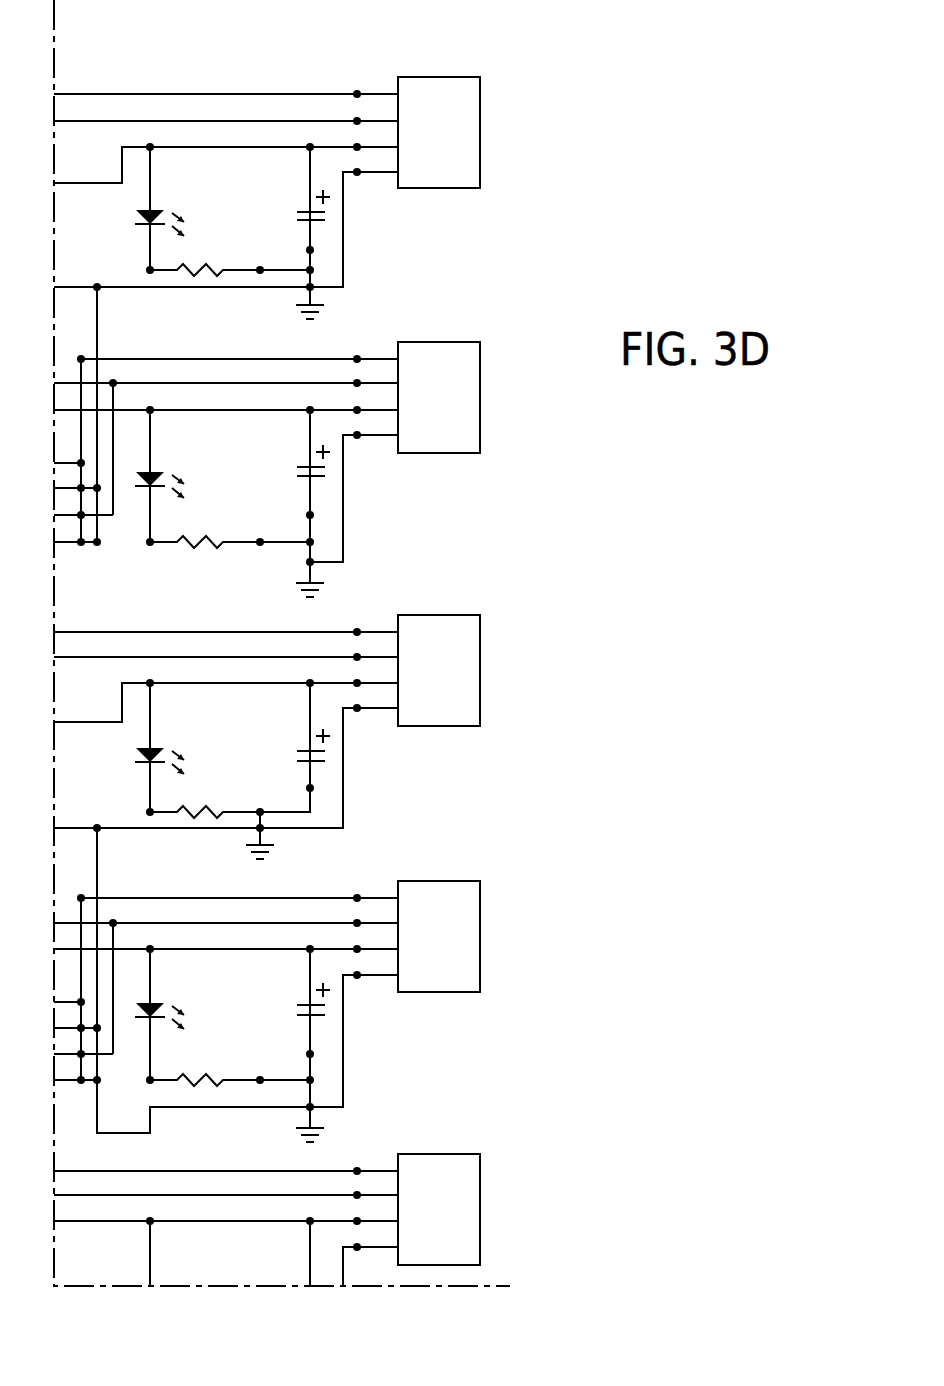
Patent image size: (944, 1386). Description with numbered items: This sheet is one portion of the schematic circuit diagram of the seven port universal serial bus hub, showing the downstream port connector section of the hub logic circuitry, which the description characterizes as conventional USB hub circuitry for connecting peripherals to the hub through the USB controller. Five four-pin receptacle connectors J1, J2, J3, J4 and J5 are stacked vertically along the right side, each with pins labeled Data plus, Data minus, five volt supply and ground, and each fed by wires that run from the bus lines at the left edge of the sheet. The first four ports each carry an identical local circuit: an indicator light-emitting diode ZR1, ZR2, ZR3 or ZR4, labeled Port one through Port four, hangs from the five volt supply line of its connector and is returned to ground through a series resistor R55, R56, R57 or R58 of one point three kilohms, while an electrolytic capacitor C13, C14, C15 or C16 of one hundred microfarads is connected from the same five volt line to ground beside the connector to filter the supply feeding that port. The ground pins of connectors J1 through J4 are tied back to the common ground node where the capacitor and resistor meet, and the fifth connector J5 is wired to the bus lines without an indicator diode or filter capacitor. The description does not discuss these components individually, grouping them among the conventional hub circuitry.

The 4-pin receptacle connector J1 is at (439, 135).
The 4-pin receptacle connector J2 is at (439, 400).
The 4-pin receptacle connector J3 is at (439, 674).
The 4-pin receptacle connector J4 is at (439, 939).
The 4-pin receptacle connector J5 is at (495, 1197).
The Port1 indicator LED ZR1 is at (179, 208).
The Port2 indicator LED ZR2 is at (179, 476).
The Port3 indicator LED ZR3 is at (179, 747).
The Port4 indicator LED ZR4 is at (179, 1014).
The 100uF capacitor C13 is at (286, 217).
The 100uF capacitor C14 is at (286, 475).
The 100uF capacitor C15 is at (286, 756).
The 100uF capacitor C16 is at (286, 1011).
The 1.3K resistor R55 is at (228, 259).
The 1.3K resistor R56 is at (228, 531).
The 1.3K resistor R57 is at (205, 801).
The 1.3K resistor R58 is at (228, 1069).